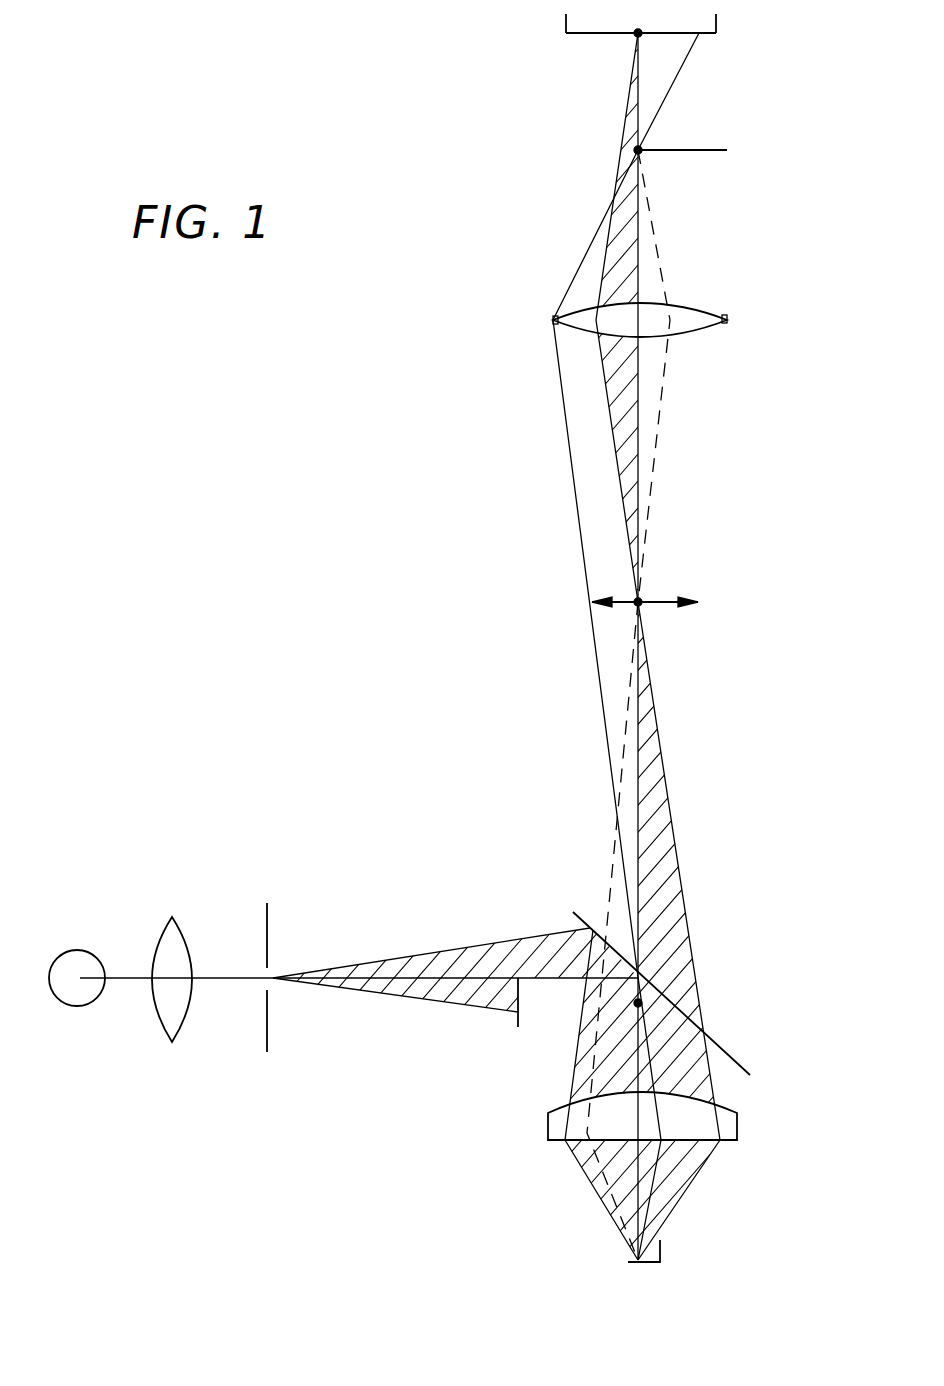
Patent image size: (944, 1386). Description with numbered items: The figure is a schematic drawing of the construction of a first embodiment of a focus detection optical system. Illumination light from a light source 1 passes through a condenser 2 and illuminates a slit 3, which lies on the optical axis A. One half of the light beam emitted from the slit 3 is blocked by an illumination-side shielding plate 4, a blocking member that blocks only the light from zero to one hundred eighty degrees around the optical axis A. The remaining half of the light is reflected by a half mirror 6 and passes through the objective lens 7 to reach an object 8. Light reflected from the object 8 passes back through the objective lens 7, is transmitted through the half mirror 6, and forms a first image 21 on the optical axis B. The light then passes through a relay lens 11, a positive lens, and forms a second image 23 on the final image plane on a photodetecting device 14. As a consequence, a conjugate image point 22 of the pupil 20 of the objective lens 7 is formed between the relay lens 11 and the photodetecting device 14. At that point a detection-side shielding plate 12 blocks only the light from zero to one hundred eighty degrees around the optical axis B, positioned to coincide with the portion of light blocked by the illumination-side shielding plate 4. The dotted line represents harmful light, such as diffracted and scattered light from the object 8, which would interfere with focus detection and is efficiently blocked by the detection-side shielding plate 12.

The light source 1 is at (77, 951).
The condenser 2 is at (168, 932).
The slit 3 is at (267, 918).
The illumination-side shielding plate 4 is at (519, 1013).
The half mirror 6 is at (732, 1057).
The objective lens 7 is at (740, 1121).
The object 8 is at (637, 1264).
The relay lens 11 is at (707, 316).
The detection-side shielding plate 12 is at (717, 152).
The photodetecting device 14 is at (585, 15).
The pupil 20 is at (652, 982).
The first image 21 is at (640, 607).
The conjugate image point 22 is at (640, 148).
The second image 23 is at (637, 37).
The optical axis A is at (222, 978).
The optical axis B is at (640, 440).